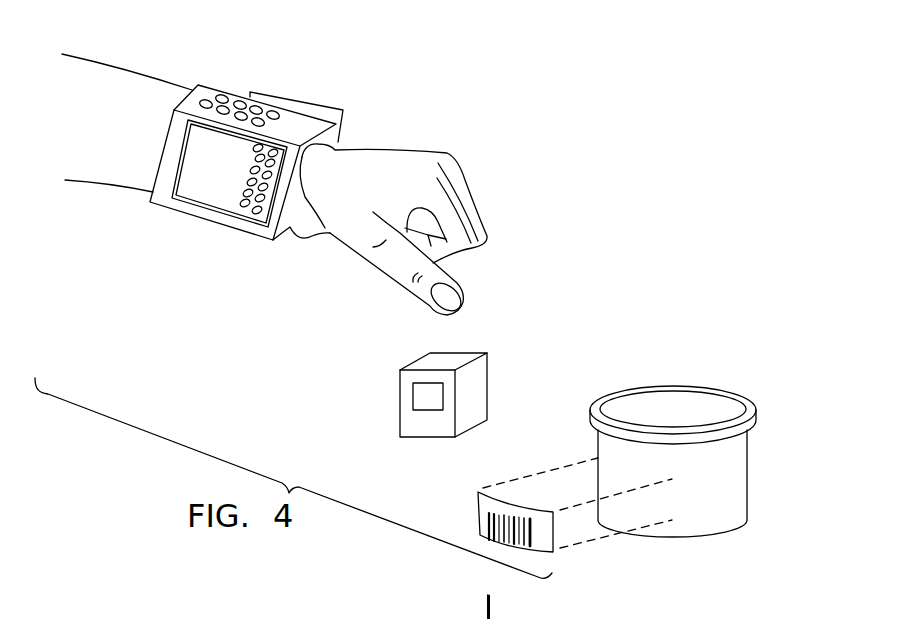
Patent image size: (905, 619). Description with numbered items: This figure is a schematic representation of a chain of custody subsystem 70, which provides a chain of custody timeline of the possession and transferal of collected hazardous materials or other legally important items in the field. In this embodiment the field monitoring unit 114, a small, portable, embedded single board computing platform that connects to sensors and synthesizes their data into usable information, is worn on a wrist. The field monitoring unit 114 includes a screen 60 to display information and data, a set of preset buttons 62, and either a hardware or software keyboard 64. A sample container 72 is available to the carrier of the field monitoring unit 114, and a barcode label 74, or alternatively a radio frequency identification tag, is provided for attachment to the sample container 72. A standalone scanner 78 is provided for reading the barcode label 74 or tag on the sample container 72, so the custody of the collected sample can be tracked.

The screen 60 is at (195, 160).
The preset buttons 62 is at (219, 95).
The keyboard 64 is at (235, 196).
The chain of custody subsystem 70 is at (644, 214).
The sample container 72 is at (730, 502).
The barcode label 74 is at (478, 507).
The standalone scanner 78 is at (473, 392).
The field monitoring unit 114 is at (270, 81).